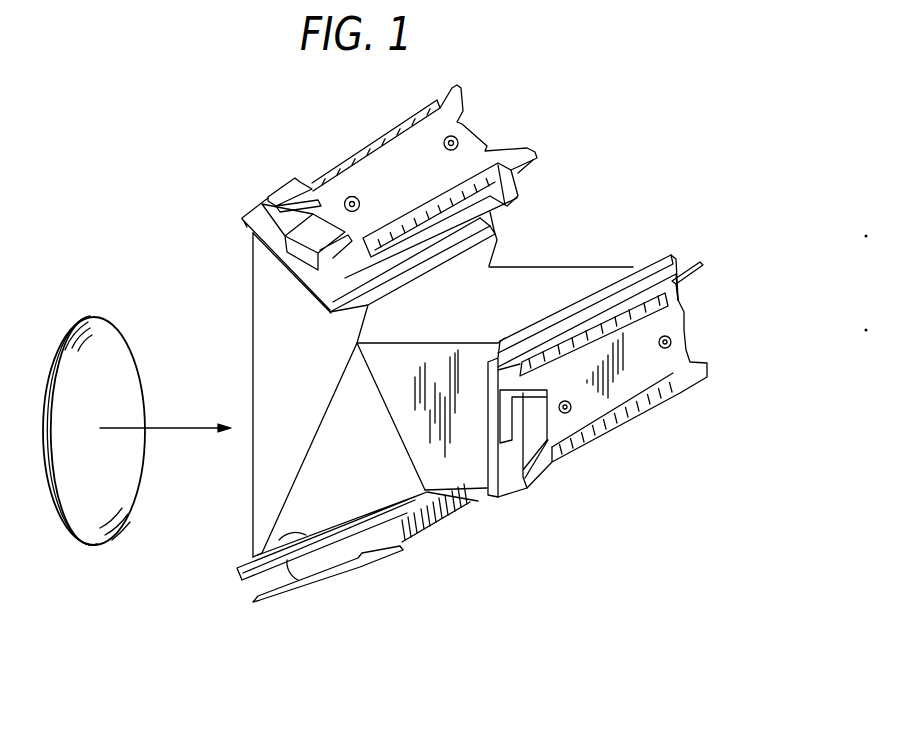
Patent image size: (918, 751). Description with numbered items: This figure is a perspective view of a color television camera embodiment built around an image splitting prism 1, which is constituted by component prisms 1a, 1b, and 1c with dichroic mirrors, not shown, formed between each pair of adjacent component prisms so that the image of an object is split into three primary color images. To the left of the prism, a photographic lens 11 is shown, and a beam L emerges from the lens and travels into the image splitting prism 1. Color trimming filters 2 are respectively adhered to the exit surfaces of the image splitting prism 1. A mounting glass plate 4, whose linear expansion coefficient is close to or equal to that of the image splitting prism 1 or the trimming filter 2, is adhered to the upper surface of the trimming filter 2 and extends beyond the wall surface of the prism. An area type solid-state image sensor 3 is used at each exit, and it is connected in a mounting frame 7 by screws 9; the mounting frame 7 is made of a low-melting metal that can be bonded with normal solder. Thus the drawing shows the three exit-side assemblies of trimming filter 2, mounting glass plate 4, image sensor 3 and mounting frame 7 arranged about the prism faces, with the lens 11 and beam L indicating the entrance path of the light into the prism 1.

The image splitting prism 1 is at (403, 410).
The component prism 1a is at (266, 369).
The component prism 1b is at (348, 508).
The component prism 1c is at (567, 277).
The color trimming filter 2 is at (494, 241).
The area type solid-state image sensor 3 is at (515, 186).
The mounting glass plate 4 is at (484, 213).
The mounting frame 7 is at (285, 183).
The screw 9 is at (350, 196).
The photographic lens 11 is at (98, 546).
The beam L is at (166, 430).